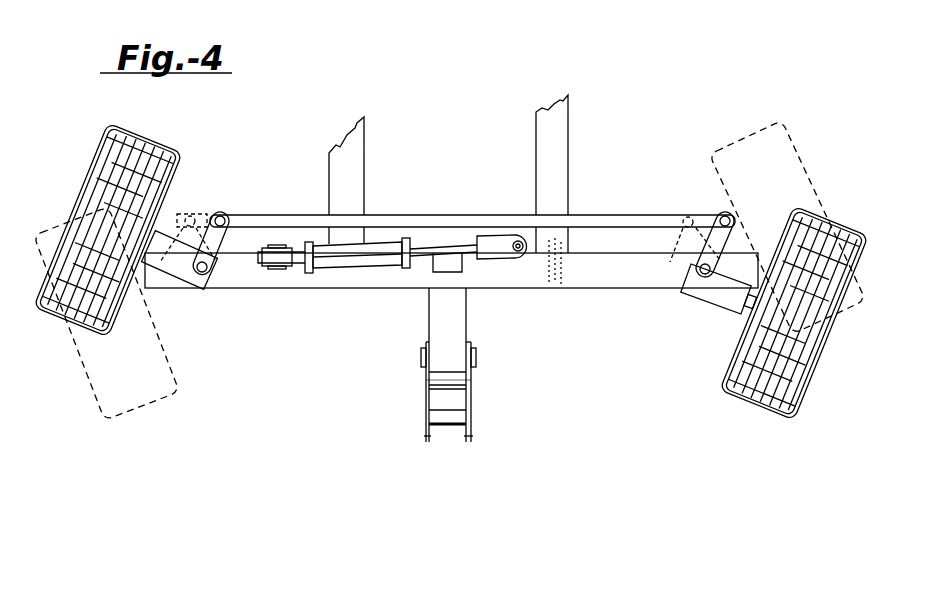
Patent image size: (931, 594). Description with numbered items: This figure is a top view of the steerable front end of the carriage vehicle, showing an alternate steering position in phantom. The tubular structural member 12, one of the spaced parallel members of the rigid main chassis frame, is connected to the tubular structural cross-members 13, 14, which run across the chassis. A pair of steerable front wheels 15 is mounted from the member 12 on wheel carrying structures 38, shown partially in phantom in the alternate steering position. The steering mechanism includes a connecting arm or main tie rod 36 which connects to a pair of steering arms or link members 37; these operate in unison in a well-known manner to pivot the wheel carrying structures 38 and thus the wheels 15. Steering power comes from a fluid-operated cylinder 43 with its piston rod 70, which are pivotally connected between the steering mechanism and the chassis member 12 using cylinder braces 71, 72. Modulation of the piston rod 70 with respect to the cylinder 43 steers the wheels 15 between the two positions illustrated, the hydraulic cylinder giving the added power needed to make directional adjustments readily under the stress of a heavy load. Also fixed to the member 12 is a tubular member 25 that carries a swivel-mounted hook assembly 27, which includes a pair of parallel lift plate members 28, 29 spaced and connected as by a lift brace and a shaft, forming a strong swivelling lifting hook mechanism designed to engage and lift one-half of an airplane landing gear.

The tubular structural member 12 is at (608, 268).
The tubular structural cross-member 13 is at (365, 152).
The tubular structural cross-member 14 is at (535, 140).
The steerable front wheel 15 is at (43, 325).
The tubular member 25 is at (447, 313).
The swivel-mounted hook assembly 27 is at (418, 430).
The lift plate member 28 is at (470, 397).
The lift plate member 29 is at (428, 397).
The main tie rod 36 is at (602, 215).
The steering arm 37 is at (226, 240).
The wheel carrying structure 38 is at (203, 290).
The cylinder 43 is at (386, 240).
The piston rod 70 is at (440, 245).
The cylinder brace 71 is at (514, 231).
The cylinder brace 72 is at (250, 240).